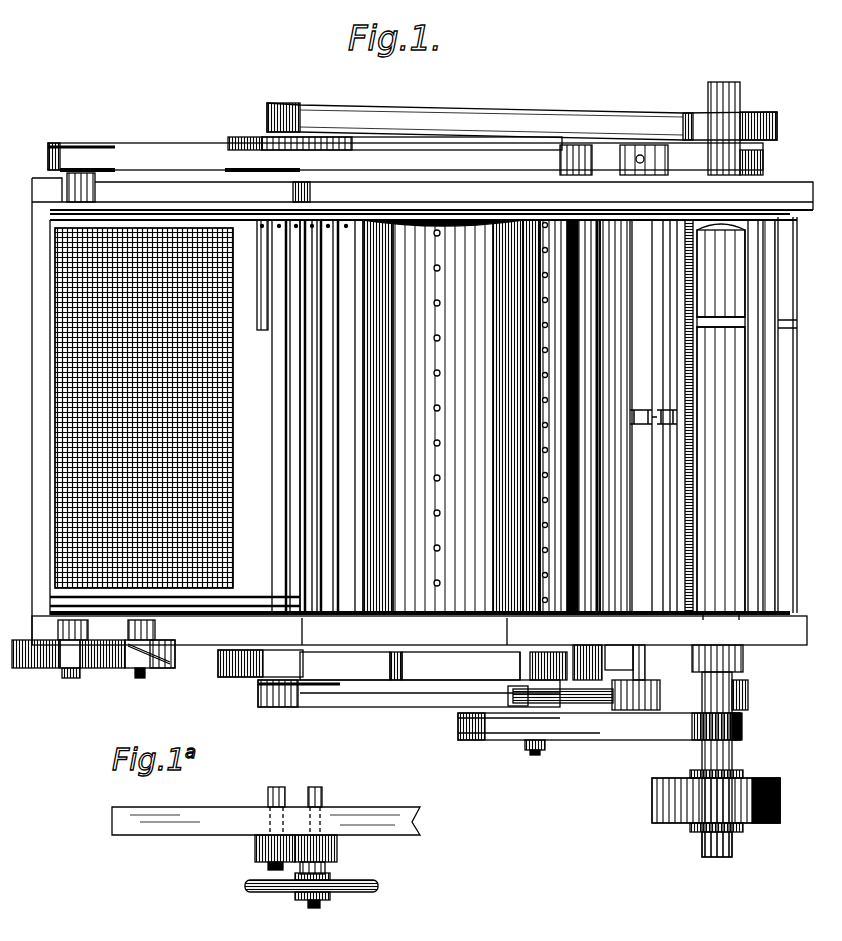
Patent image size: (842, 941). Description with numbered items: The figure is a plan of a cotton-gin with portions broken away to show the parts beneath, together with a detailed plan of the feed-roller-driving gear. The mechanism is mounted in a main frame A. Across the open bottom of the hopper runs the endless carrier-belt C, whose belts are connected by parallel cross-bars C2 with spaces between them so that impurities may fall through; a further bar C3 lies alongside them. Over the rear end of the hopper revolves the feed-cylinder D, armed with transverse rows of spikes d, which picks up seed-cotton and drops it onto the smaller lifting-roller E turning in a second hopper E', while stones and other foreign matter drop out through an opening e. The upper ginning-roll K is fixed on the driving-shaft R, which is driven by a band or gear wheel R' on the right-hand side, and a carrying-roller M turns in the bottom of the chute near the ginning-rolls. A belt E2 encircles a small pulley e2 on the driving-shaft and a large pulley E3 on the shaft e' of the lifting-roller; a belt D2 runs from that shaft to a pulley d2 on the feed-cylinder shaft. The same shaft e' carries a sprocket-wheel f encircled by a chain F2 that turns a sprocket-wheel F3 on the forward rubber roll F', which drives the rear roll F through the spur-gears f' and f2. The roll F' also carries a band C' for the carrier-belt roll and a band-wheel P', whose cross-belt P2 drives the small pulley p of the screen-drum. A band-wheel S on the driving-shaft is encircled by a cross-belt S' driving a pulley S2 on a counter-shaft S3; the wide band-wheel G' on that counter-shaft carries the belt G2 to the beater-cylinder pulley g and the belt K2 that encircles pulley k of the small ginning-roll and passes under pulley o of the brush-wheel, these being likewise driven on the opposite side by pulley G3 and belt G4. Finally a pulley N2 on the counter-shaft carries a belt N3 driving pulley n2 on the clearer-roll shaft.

In FIG. 1, the main frame A is at (414, 411).
In FIG. 1A, the main frame A is at (266, 821).
In FIG. 1, the band C' is at (405, 172).
In FIG. 1, the cross-belt S' is at (522, 115).
In FIG. 1, the pulley S2 is at (335, 110).
In FIG. 1, the band-wheel S is at (686, 112).
In FIG. 1, the driving-shaft R is at (710, 467).
In FIG. 1, the belt G2 is at (463, 144).
In FIG. 1, the band-wheel G' is at (245, 131).
In FIG. 1, the pulley g is at (566, 150).
In FIG. 1, the belt K2 is at (622, 149).
In FIG. 1, the pulley k is at (765, 158).
In FIG. 1, the counter-shaft S3 is at (292, 190).
In FIG. 1, the rear rubber roll F is at (144, 408).
In FIG. 1, the cross-bars C2 is at (266, 297).
In FIG. 1, the carrier-belt C is at (306, 416).
In FIG. 1, the bar C3 is at (310, 416).
In FIG. 1, the feed roll or cylinder D is at (443, 416).
In FIG. 1, the spikes or teeth d is at (433, 303).
In FIG. 1, the hopper E' is at (561, 416).
In FIG. 1, the lifting-roller E is at (604, 416).
In FIG. 1, the opening e is at (641, 416).
In FIG. 1, the pulley o is at (653, 435).
In FIG. 1, the upper ginning-roll K is at (715, 420).
In FIG. 1, the carrying-roller M is at (770, 416).
In FIG. 1, the band-wheel P' is at (50, 658).
In FIG. 1, the cross-belt P2 is at (110, 668).
In FIG. 1, the pulley p is at (160, 668).
In FIG. 1, the pulley G3 is at (235, 677).
In FIG. 1, the belt G4 is at (345, 666).
In FIG. 1, the pulley d2 is at (406, 666).
In FIG. 1, the belt D2 is at (484, 666).
In FIG. 1, the pulley N2 is at (409, 704).
In FIG. 1, the belt N3 is at (430, 693).
In FIG. 1, the sprocket-wheel f is at (544, 695).
In FIG. 1, the sprocket-wheel F3 is at (645, 712).
In FIG. 1A, the sprocket-wheel F3 is at (311, 892).
In FIG. 1, the spur-gear f2 is at (575, 646).
In FIG. 1A, the spur-gear f2 is at (261, 852).
In FIG. 1, the spur-gear f' is at (623, 662).
In FIG. 1A, the spur-gear f' is at (325, 854).
In FIG. 1, the pulley n2 is at (748, 688).
In FIG. 1, the belt E2 is at (599, 726).
In FIG. 1, the chain F2 is at (556, 712).
In FIG. 1, the pulley E3 is at (482, 741).
In FIG. 1, the lifter-roller shaft e' is at (535, 760).
In FIG. 1, the pulley e2 is at (742, 740).
In FIG. 1, the band or gear wheel R' is at (716, 813).
In FIG. 1A, the forward rubber roll F' is at (292, 804).